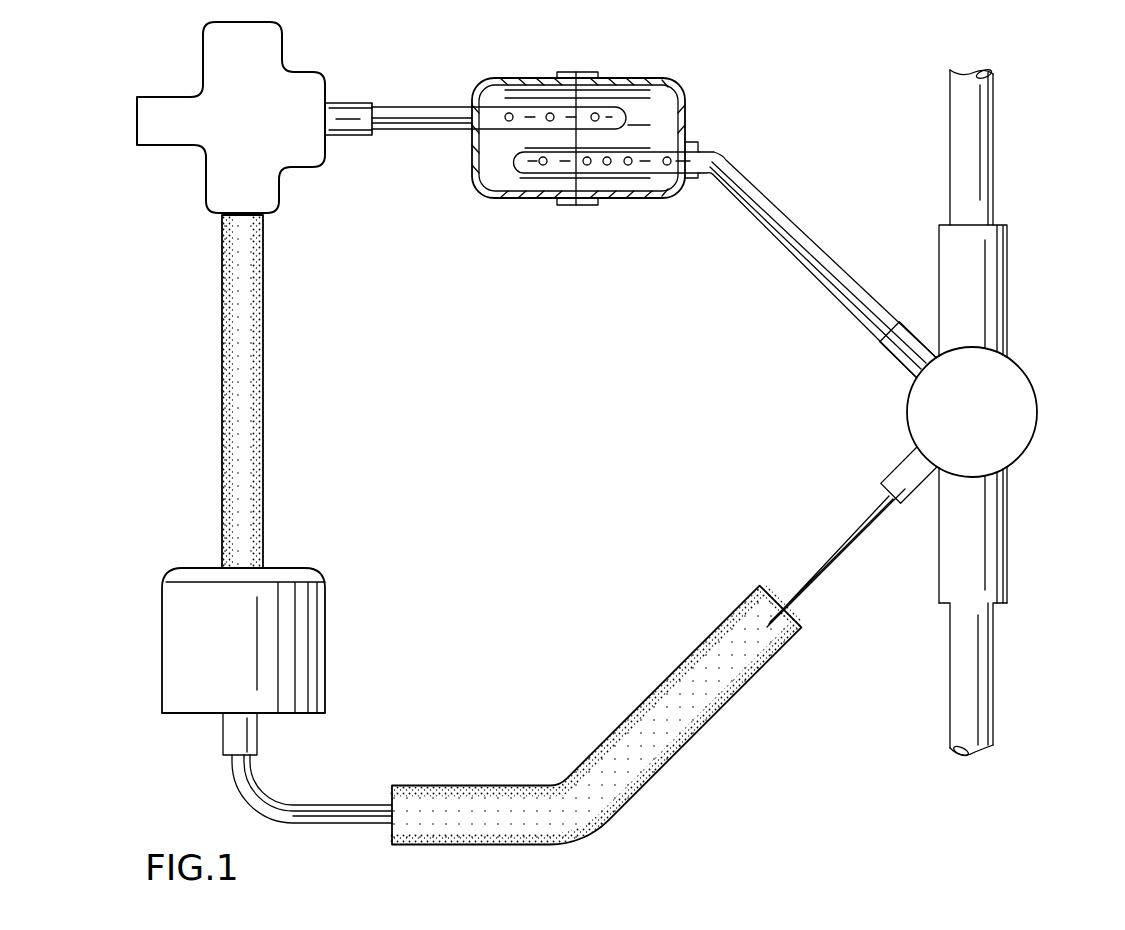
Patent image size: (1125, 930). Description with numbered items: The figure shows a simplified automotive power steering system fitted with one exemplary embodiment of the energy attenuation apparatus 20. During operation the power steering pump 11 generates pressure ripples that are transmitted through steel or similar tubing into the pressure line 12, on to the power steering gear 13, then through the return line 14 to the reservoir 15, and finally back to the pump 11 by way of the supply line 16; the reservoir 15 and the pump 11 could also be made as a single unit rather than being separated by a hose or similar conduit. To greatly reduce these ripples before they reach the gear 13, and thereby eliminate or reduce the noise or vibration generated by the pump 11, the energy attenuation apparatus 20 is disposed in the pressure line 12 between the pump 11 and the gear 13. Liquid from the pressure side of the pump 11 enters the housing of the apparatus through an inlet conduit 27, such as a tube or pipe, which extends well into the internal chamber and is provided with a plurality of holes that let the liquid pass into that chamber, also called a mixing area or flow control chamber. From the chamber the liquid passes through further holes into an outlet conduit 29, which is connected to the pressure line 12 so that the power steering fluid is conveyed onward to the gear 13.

The power steering pump 11 is at (213, 181).
The pressure line 12 is at (811, 265).
The power steering gear 13 is at (1027, 392).
The return line 14 is at (656, 693).
The reservoir 15 is at (320, 603).
The supply line 16 is at (258, 362).
The energy attenuation apparatus 20 is at (620, 65).
The inlet conduit 27 is at (418, 122).
The outlet conduit 29 is at (663, 150).